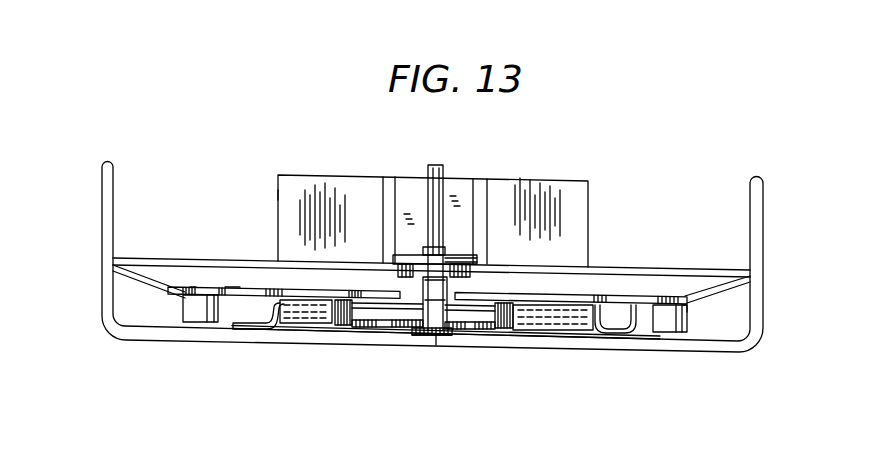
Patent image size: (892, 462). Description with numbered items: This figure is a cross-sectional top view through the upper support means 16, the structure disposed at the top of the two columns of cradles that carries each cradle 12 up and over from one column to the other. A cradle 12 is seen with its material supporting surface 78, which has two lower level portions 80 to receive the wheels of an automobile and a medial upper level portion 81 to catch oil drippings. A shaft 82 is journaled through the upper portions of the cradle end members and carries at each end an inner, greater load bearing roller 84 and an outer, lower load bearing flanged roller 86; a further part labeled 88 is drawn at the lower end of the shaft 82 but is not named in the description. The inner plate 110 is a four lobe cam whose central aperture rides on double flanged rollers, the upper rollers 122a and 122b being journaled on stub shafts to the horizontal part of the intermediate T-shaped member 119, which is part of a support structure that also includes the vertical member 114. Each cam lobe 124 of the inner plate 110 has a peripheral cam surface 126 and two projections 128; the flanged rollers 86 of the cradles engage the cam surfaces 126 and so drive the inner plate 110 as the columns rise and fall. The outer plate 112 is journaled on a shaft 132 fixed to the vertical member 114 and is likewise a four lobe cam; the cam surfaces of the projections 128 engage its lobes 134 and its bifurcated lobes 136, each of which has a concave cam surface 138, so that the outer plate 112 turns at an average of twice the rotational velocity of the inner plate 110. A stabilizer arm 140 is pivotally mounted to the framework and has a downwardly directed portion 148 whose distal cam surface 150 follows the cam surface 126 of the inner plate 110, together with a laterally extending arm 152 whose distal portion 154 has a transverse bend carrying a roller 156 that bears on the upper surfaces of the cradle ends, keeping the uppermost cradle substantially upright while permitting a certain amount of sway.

The cradle 12 is at (270, 190).
The upper support means 16 is at (192, 346).
The material supporting surface 78 is at (433, 223).
The lower level portion 80 is at (339, 178).
The medial upper level portion 81 is at (460, 182).
The shaft 82 is at (422, 235).
The inner roller 84 is at (446, 290).
The outer flanged roller 86 is at (420, 300).
The nut 88 is at (426, 336).
The inner plate 110 is at (237, 292).
The outer plate 112 is at (466, 332).
The vertical member 114 is at (448, 338).
The intermediate T-shaped member 119 is at (372, 308).
The upper double flanged roller 122a is at (316, 290).
The upper double flanged roller 122b is at (557, 293).
The cam lobe 124 is at (628, 335).
The peripheral cam surface 126 is at (190, 290).
The projection 128 is at (207, 310).
The shaft 132 is at (455, 336).
The lobe 134 is at (310, 324).
The bifurcated lobe 136 is at (515, 322).
The concave cam surface 138 is at (410, 318).
The stabilizer arm 140 is at (254, 259).
The downwardly directed portion 148 is at (120, 272).
The distal cam surface 150 is at (690, 316).
The laterally extending arm 152 is at (410, 257).
The distal portion 154 is at (456, 258).
The roller 156 is at (403, 266).